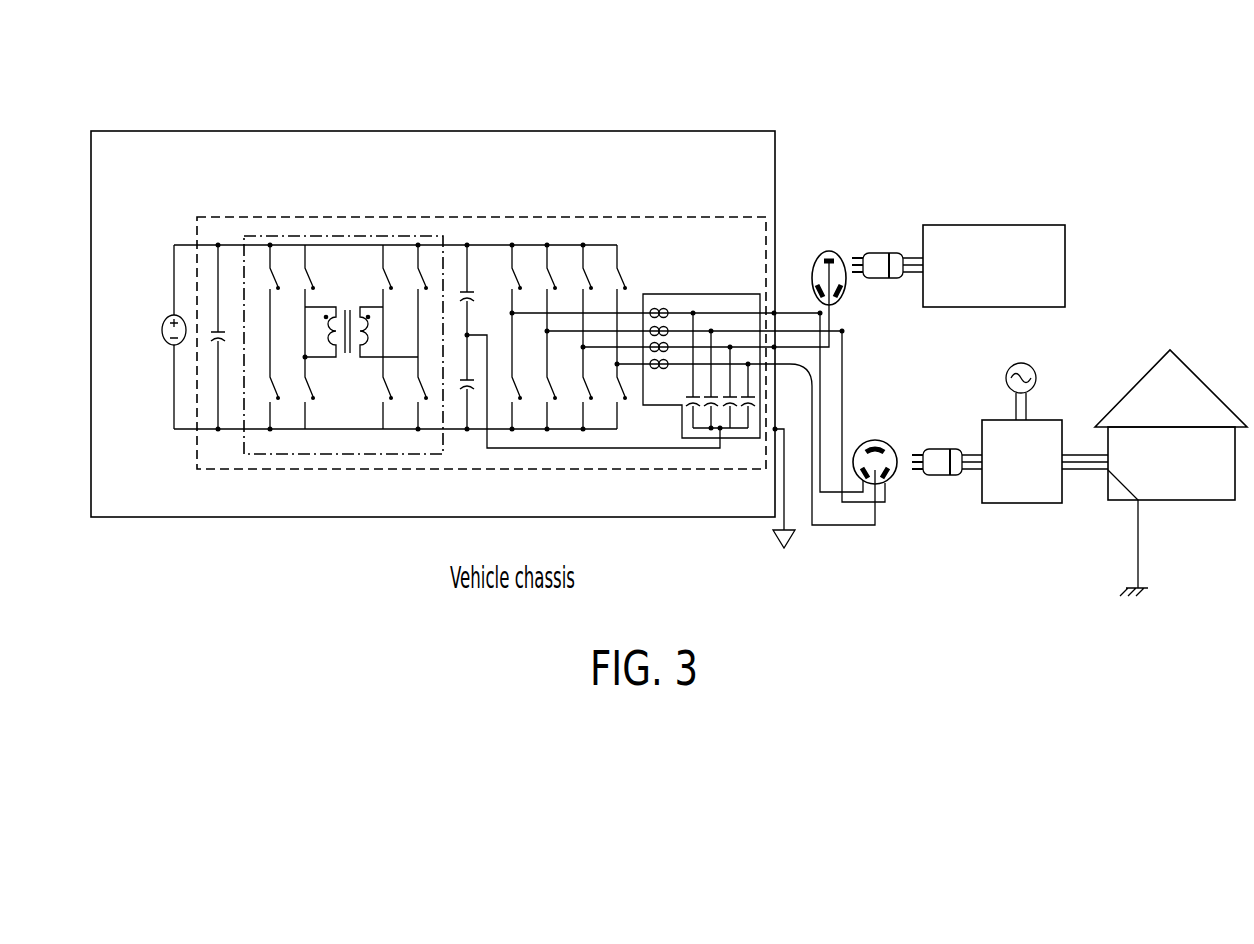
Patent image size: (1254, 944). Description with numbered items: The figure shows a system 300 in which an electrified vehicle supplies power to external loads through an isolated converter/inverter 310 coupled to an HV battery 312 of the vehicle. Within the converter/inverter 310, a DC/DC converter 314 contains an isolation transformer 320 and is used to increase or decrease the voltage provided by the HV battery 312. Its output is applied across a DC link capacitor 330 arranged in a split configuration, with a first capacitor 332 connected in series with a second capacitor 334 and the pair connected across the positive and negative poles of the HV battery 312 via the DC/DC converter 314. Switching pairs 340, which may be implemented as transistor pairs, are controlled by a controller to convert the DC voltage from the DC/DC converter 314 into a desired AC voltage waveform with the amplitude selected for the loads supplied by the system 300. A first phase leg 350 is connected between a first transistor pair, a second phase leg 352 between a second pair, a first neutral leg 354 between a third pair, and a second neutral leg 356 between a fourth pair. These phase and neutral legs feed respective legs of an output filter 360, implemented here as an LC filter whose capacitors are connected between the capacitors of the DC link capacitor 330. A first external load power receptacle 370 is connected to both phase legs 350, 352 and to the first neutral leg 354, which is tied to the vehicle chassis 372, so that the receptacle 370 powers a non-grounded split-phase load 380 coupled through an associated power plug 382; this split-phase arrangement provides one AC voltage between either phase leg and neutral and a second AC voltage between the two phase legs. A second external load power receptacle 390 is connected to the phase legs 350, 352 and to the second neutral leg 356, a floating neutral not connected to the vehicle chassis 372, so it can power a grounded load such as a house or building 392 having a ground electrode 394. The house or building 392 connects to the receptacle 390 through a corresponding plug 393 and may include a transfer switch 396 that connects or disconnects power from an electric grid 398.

The system 300 is at (752, 108).
The isolated converter/inverter 310 is at (297, 217).
The HV battery 312 is at (168, 316).
The DC/DC converter 314 is at (253, 237).
The isolation transformer 320 is at (346, 283).
The DC link capacitor 330 is at (476, 263).
The first capacitor 332 is at (463, 265).
The second capacitor 334 is at (469, 392).
The switching pairs 340 is at (561, 222).
The first phase leg (L1) 350 is at (527, 313).
The second phase leg (L2) 352 is at (563, 331).
The first neutral leg (N1) 354 is at (600, 347).
The second neutral leg (N2) 356 is at (620, 364).
The output filter 360 is at (697, 294).
The first external load power receptacle 370 is at (827, 252).
The vehicle chassis 372 is at (775, 153).
The split-phase load 380 is at (998, 225).
The power plug 382 is at (880, 252).
The second external load power receptacle 390 is at (872, 441).
The house or building 392 is at (1145, 378).
The plug 393 is at (940, 448).
The ground electrode 394 is at (1140, 563).
The transfer switch 396 is at (1020, 503).
The electric grid 398 is at (1037, 380).